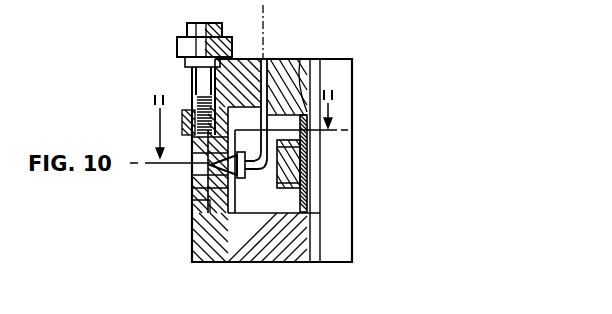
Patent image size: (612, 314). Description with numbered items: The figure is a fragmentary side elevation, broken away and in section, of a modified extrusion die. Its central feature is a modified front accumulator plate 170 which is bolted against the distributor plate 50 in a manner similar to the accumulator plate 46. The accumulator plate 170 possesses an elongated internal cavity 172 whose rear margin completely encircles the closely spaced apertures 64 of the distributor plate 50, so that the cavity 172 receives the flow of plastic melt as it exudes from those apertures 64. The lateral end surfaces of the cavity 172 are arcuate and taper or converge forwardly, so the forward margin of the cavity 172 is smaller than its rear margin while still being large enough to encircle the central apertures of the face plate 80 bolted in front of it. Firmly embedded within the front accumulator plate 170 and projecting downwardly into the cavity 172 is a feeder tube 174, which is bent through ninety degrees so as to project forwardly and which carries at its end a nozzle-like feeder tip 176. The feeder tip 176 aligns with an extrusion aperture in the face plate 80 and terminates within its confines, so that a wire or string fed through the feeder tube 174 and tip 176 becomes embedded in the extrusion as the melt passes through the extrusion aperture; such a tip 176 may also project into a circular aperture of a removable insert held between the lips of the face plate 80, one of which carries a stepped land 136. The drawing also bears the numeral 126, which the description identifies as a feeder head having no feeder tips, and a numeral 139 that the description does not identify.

The rear accumulator plate 46 is at (343, 60).
The distributor plate 50 is at (302, 60).
The apertures 64 is at (258, 211).
The face plate 80 is at (213, 263).
The feeder head 126 is at (300, 178).
The stepped land 136 is at (190, 162).
The side wall 139 is at (193, 197).
The front accumulator plate 170 is at (255, 263).
The internal cavity 172 is at (255, 205).
The feeder tubes 174 is at (273, 149).
The feeder tip 176 is at (195, 227).